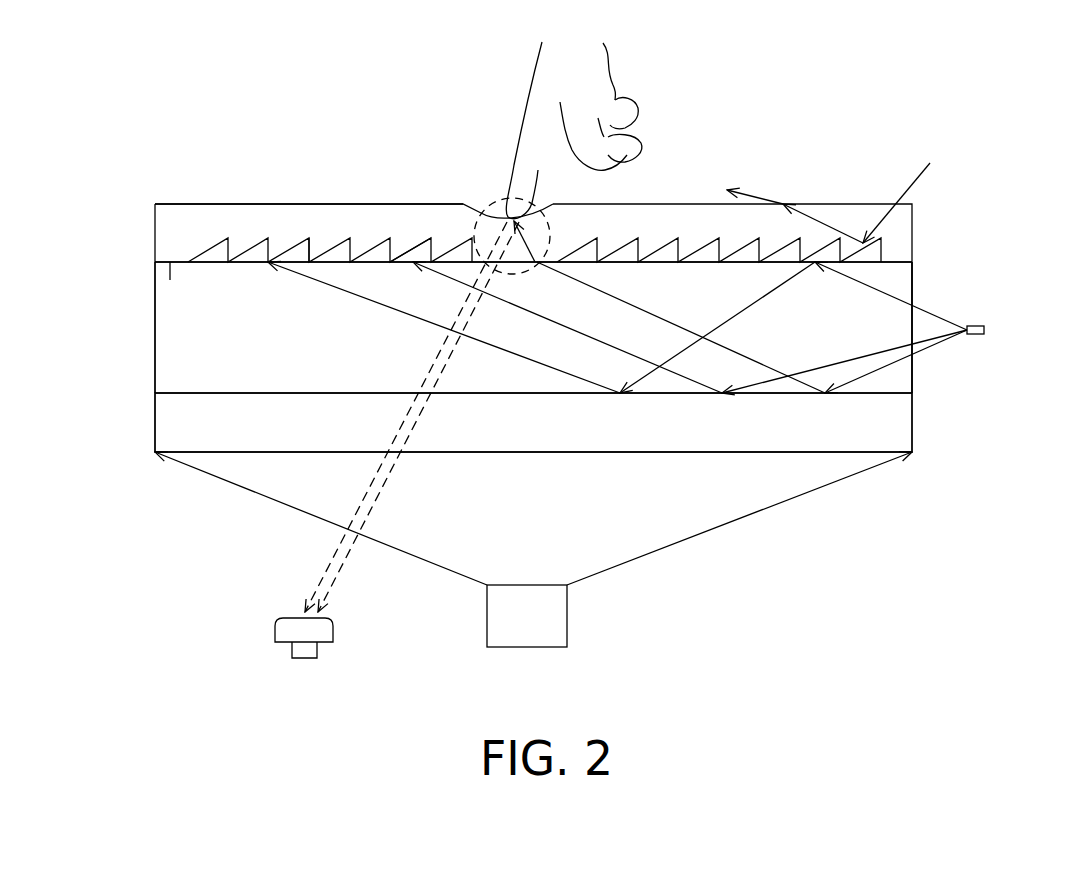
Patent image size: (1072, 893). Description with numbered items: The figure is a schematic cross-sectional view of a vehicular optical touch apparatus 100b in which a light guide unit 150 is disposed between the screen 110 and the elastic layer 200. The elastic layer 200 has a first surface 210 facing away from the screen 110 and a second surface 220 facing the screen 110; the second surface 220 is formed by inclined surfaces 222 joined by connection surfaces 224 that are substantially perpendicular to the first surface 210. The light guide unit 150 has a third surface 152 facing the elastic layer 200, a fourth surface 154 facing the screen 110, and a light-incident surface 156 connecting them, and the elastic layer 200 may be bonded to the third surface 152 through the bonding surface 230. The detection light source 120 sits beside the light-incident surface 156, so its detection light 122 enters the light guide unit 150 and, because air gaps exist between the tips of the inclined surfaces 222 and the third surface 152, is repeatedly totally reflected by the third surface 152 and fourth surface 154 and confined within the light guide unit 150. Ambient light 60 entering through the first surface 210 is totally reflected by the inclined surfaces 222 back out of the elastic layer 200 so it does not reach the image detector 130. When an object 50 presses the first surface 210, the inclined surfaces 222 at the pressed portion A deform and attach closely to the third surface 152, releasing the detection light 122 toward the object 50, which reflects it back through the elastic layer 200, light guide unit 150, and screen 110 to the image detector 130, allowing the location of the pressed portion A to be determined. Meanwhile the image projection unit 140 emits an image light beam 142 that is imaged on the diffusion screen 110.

The object 50 is at (603, 90).
The ambient light 60 is at (887, 200).
The vehicular optical touch apparatus 100b is at (985, 644).
The screen 110 is at (888, 413).
The detection light source 120 is at (985, 332).
The detection light 122 is at (457, 306).
The image detector 130 is at (293, 625).
The image projection unit 140 is at (568, 617).
The image light beam 142 is at (710, 530).
The light guide unit 150 is at (171, 362).
The third surface 152 is at (179, 259).
The fourth surface 154 is at (200, 396).
The light-incident surface 156 is at (913, 298).
The elastic layer 200 is at (900, 228).
The first surface 210 is at (686, 200).
The second surface 220 is at (251, 250).
The inclined surface 222 is at (409, 252).
The connection surface 224 is at (300, 244).
The bonding surface 230 is at (168, 267).
The pressed portion A is at (553, 236).